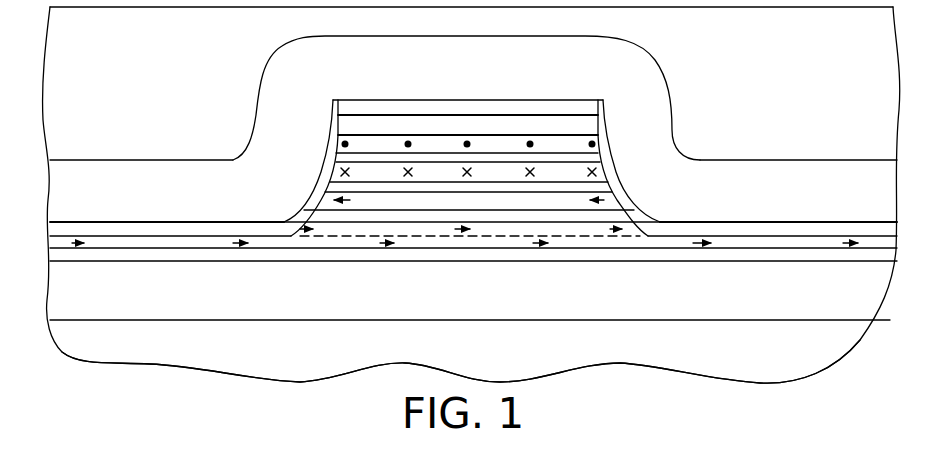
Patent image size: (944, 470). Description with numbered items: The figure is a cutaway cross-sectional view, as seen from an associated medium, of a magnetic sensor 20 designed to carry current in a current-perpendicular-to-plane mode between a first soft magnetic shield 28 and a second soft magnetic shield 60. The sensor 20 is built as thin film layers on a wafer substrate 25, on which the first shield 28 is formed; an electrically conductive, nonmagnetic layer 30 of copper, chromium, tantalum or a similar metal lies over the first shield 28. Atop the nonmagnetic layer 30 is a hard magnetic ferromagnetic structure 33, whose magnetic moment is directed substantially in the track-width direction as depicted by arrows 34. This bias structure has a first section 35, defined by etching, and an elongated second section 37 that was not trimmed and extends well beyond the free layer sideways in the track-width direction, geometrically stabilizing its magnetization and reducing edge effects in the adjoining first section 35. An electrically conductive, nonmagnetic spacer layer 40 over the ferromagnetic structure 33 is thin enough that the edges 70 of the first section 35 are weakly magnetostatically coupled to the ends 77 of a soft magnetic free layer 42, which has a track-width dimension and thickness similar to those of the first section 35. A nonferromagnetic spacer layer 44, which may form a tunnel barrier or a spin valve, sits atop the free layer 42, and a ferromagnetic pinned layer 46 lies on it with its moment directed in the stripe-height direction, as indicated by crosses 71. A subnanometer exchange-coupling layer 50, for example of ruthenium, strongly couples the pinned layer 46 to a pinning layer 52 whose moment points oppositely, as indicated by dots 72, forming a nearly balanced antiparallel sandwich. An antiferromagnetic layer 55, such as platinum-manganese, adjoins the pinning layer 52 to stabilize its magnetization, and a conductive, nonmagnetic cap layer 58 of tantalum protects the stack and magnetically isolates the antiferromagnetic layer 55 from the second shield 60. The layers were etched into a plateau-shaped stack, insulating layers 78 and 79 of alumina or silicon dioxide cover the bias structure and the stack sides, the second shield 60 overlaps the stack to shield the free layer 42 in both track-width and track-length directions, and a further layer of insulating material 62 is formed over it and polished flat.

The magnetic sensor 20 is at (233, 78).
The wafer substrate 25 is at (453, 355).
The first soft magnetic shield 28 is at (727, 302).
The nonmagnetic layer 30 is at (160, 262).
The ferromagnetic structure 33 is at (589, 250).
The arrows 34 is at (237, 249).
The first section 35 is at (350, 238).
The second section 37 is at (148, 236).
The spacer layer 40 is at (503, 223).
The free layer 42 is at (437, 212).
The spacer layer 44 is at (620, 192).
The pinned layer 46 is at (325, 160).
The exchange-coupling layer 50 is at (558, 153).
The pinning layer 52 is at (363, 135).
The antiferromagnetic layer 55 is at (514, 115).
The cap layer 58 is at (413, 100).
The second soft magnetic shield 60 is at (454, 74).
The insulating material 62 is at (91, 109).
The edges 70 is at (289, 221).
The crosses 71 is at (611, 180).
The dots 72 is at (330, 135).
The ends 77 is at (308, 196).
The insulating layer 78 is at (190, 222).
The insulating layer 79 is at (742, 222).